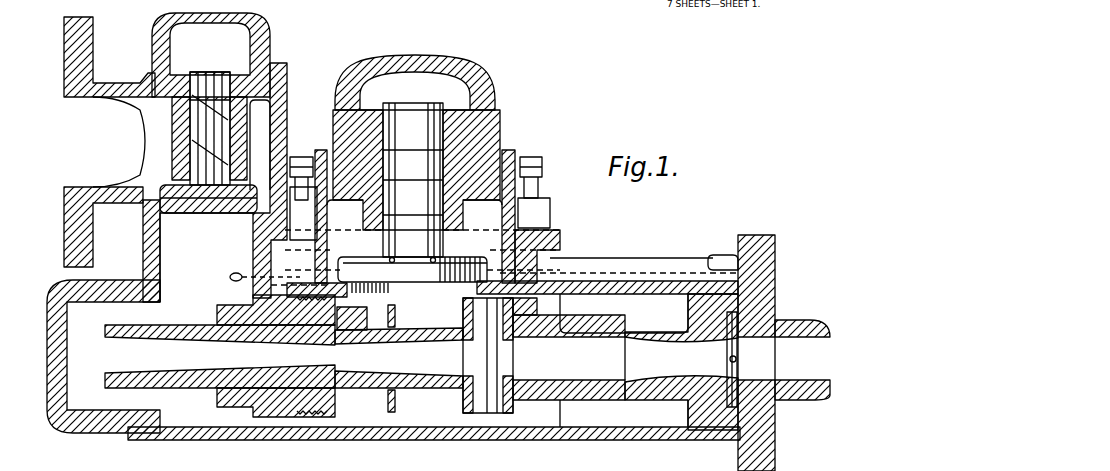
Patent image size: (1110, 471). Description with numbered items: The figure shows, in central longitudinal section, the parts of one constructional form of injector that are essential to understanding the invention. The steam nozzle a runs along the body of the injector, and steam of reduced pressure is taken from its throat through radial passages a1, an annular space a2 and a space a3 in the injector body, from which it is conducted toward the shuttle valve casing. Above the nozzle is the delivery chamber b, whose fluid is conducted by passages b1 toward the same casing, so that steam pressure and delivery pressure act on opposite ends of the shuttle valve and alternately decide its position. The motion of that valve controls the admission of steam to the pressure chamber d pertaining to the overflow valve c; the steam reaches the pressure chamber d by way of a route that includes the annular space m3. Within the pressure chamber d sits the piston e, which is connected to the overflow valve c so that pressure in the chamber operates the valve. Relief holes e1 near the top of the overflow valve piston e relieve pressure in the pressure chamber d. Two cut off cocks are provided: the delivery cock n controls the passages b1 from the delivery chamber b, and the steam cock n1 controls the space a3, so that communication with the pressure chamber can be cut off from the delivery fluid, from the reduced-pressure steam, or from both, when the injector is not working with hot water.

The steam nozzle a is at (727, 362).
The radial passages a1 is at (736, 360).
The annular space a2 is at (773, 293).
The space in the injector body a3 is at (663, 270).
The delivery chamber b is at (198, 252).
The passages b1 is at (233, 274).
The overflow valve c is at (421, 270).
The pressure chamber d is at (415, 82).
The piston e is at (406, 254).
The relief holes e1 is at (413, 180).
The annular space m3 is at (524, 141).
The cut off cock n is at (303, 156).
The cut off cock n1 is at (528, 157).